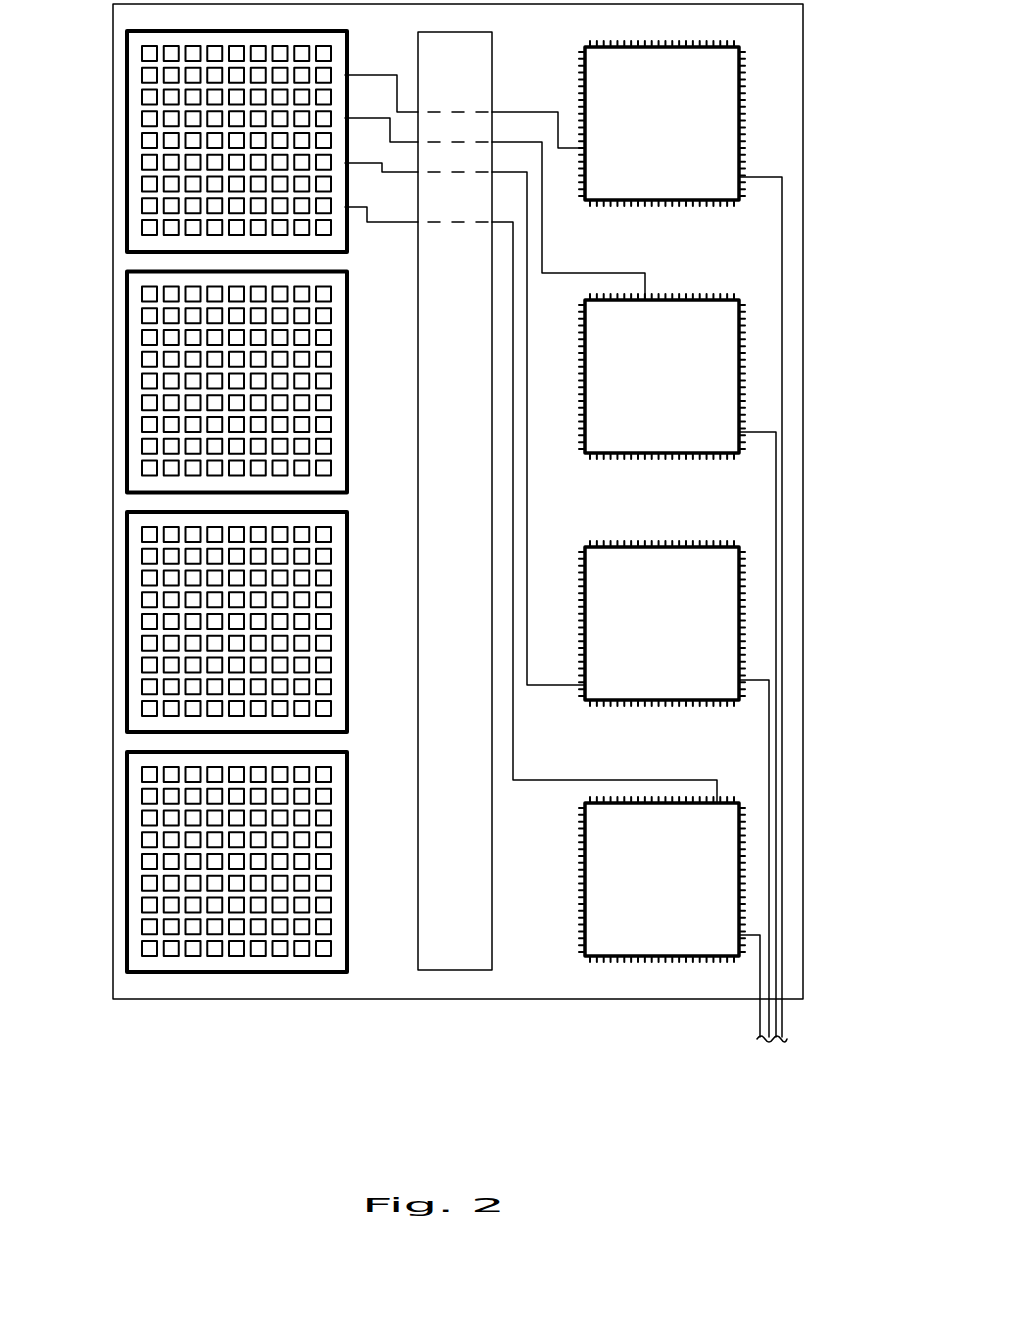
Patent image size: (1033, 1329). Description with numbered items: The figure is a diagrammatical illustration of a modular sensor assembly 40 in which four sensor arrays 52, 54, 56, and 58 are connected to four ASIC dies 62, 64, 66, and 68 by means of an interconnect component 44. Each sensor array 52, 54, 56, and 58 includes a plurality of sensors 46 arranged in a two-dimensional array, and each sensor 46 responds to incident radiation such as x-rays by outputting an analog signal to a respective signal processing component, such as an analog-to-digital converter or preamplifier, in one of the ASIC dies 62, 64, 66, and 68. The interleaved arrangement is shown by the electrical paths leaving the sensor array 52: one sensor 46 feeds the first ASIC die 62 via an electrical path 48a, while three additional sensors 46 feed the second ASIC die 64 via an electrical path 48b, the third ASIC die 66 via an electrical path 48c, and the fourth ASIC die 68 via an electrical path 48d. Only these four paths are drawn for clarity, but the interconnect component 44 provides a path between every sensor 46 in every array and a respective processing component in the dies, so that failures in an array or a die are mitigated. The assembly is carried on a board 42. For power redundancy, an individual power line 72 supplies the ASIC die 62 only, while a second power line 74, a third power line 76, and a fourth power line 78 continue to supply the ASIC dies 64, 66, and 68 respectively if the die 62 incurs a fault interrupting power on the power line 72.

The modular sensor assembly 40 is at (228, 1032).
The printed circuit board 42 is at (702, 1002).
The interconnect component 44 is at (418, 666).
The sensor 46 is at (142, 98).
The electrical path 48a is at (513, 110).
The electrical path 48b is at (573, 273).
The electrical path 48c is at (528, 487).
The electrical path 48d is at (523, 778).
The sensor array 52 is at (127, 172).
The sensor array 54 is at (127, 494).
The sensor array 56 is at (127, 670).
The sensor array 58 is at (133, 972).
The first ASIC die 62 is at (700, 203).
The second ASIC die 64 is at (663, 460).
The third ASIC die 66 is at (715, 708).
The fourth ASIC die 68 is at (585, 868).
The power line 72 is at (782, 240).
The second power line 74 is at (763, 427).
The third power line 76 is at (770, 708).
The fourth power line 78 is at (760, 1021).